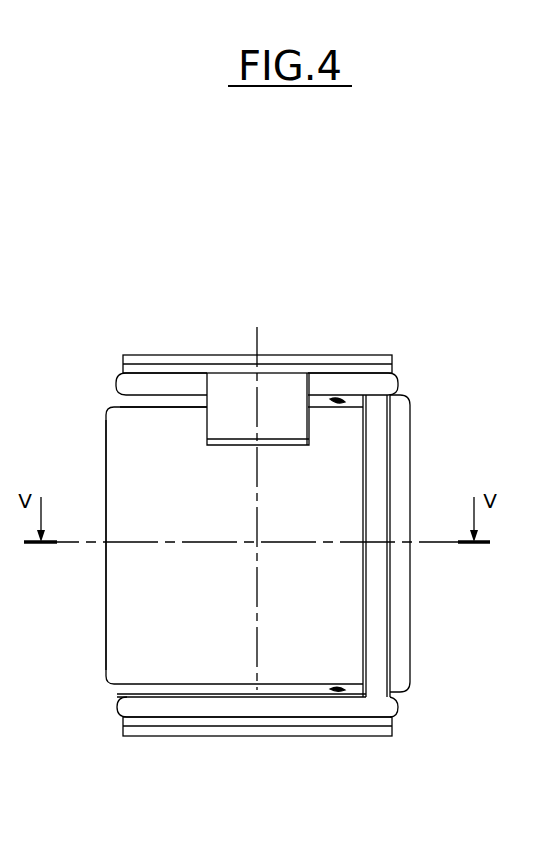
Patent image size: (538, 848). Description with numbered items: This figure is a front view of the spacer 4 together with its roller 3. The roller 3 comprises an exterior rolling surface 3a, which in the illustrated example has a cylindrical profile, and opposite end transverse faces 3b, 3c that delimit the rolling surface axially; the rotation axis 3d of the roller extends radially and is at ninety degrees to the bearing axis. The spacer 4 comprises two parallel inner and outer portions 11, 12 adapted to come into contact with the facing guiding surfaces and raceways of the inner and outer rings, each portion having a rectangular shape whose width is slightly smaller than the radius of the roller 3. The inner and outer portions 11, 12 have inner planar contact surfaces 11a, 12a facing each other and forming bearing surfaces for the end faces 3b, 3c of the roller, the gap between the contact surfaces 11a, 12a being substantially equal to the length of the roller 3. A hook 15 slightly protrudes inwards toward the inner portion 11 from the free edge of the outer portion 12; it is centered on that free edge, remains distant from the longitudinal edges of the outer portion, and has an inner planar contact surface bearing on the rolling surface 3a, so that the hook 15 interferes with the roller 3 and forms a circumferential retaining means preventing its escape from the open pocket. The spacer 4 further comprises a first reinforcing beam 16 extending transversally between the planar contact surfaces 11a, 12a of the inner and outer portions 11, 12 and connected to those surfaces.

The spacer 4 is at (133, 326).
The outer portion 12 is at (108, 382).
The inner portion 11 is at (108, 708).
The roller 3 is at (227, 522).
The exterior rolling surface 3a is at (106, 455).
The end transverse face 3b is at (200, 697).
The end transverse face 3c is at (177, 392).
The rotation axis 3d is at (257, 327).
The hook 15 is at (235, 420).
The inner planar contact surface 12a is at (343, 402).
The inner planar contact surface 11a is at (343, 690).
The first reinforcing beam 16 is at (380, 631).